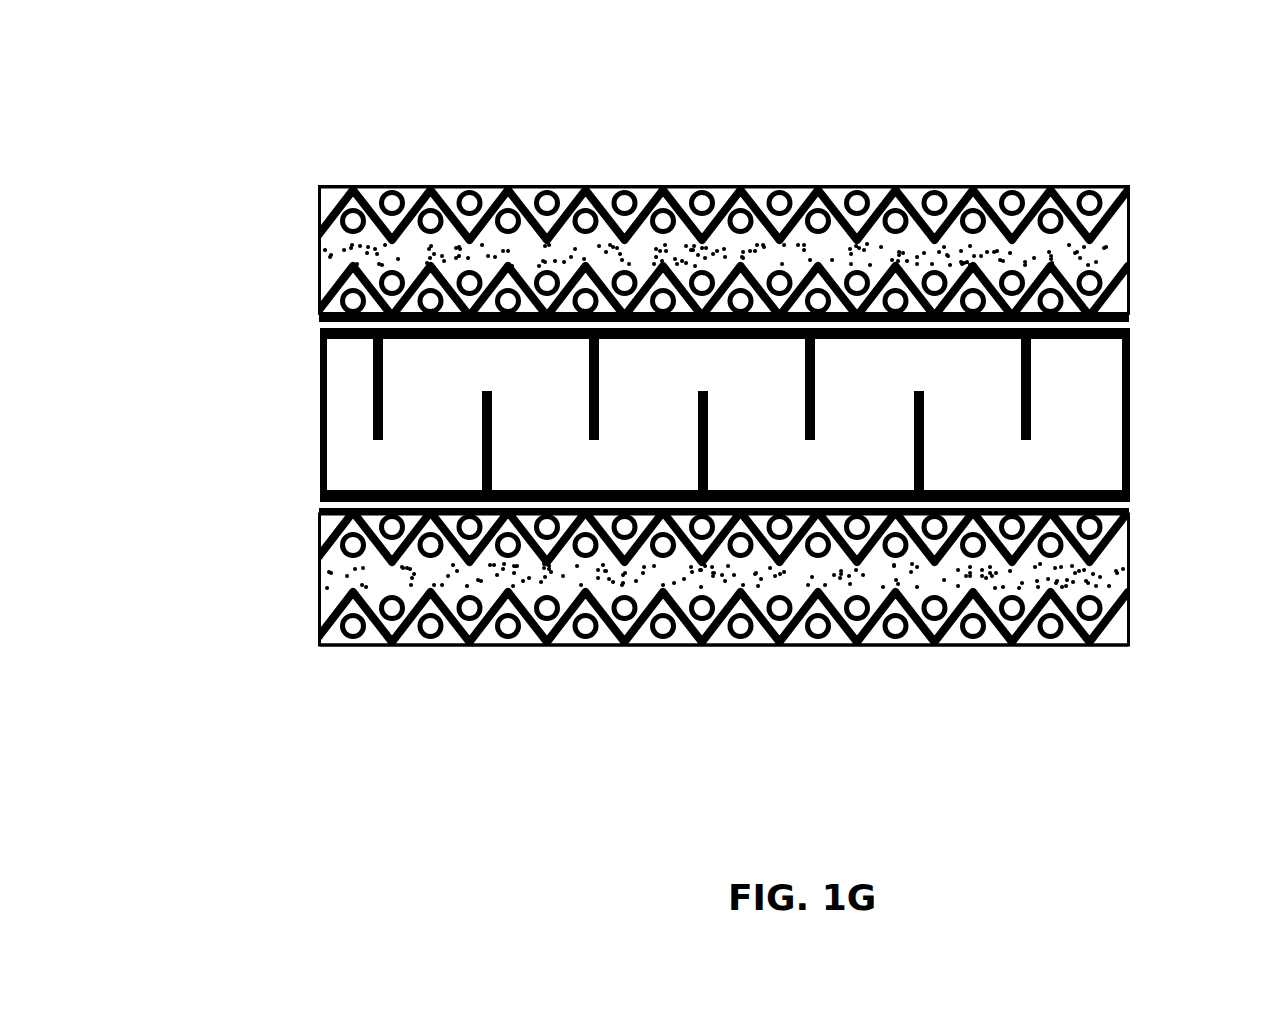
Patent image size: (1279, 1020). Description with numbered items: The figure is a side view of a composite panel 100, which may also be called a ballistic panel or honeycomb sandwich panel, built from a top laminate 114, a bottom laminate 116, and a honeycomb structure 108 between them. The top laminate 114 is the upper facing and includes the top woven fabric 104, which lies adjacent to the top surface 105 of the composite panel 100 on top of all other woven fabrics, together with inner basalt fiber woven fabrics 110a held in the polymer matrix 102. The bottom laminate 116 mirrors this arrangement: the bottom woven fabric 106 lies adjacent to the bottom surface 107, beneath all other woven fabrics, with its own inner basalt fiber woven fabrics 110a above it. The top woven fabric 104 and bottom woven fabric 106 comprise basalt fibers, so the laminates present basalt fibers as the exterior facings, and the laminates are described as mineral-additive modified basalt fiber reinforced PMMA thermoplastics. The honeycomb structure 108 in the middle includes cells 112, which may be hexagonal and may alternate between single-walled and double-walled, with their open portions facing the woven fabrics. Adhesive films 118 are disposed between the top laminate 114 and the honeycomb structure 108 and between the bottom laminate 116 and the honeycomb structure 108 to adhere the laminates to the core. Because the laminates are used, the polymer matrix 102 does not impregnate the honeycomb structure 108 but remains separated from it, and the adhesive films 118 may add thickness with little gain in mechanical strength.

The composite panel 100 is at (193, 63).
The polymer matrix 102 is at (1130, 251).
The top woven fabric 104 is at (316, 201).
The top surface 105 is at (432, 186).
The bottom woven fabric 106 is at (316, 607).
The bottom surface 107 is at (443, 645).
The honeycomb structure 108 is at (1130, 413).
The inner basalt fiber woven fabrics 110a is at (316, 286).
The cells 112 is at (340, 431).
The top laminate 114 is at (1163, 200).
The bottom laminate 116 is at (1152, 556).
The adhesive films 118 is at (1128, 323).